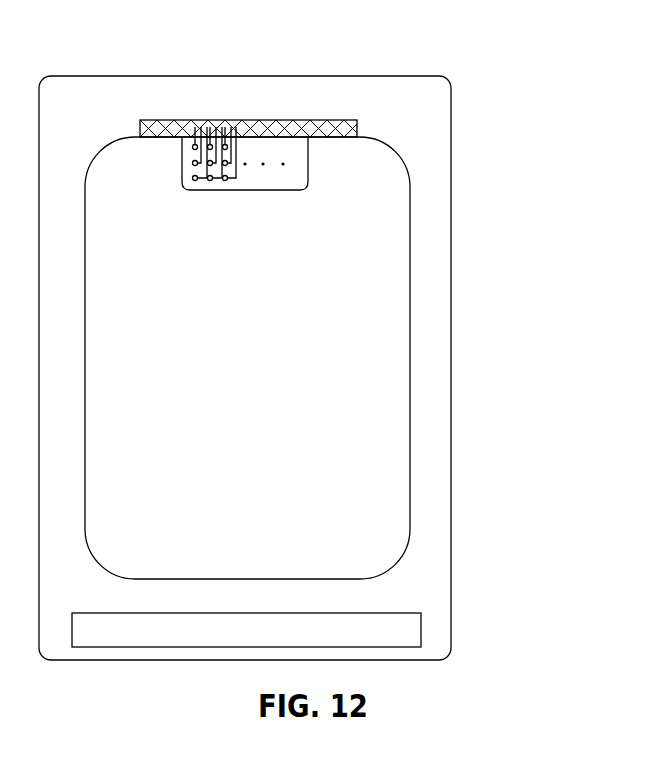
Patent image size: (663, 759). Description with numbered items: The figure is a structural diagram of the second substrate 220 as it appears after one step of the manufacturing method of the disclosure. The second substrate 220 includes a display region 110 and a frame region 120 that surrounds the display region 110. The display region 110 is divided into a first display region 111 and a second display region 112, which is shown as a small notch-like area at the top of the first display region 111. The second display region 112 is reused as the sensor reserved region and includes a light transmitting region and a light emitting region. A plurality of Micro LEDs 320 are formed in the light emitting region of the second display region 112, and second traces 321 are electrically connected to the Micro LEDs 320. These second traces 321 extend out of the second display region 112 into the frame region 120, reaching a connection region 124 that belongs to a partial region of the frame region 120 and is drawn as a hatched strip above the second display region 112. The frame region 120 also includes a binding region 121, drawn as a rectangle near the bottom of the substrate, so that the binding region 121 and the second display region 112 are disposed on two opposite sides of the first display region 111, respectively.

The second substrate 220 is at (94, 59).
The frame region 120 is at (428, 509).
The binding region 121 is at (410, 632).
The display region 110 is at (333, 358).
The first display region 111 is at (372, 215).
The second display region 112 is at (298, 157).
The connection region 124 is at (314, 122).
The Micro LEDs 320 is at (187, 143).
The second traces 321 is at (241, 135).